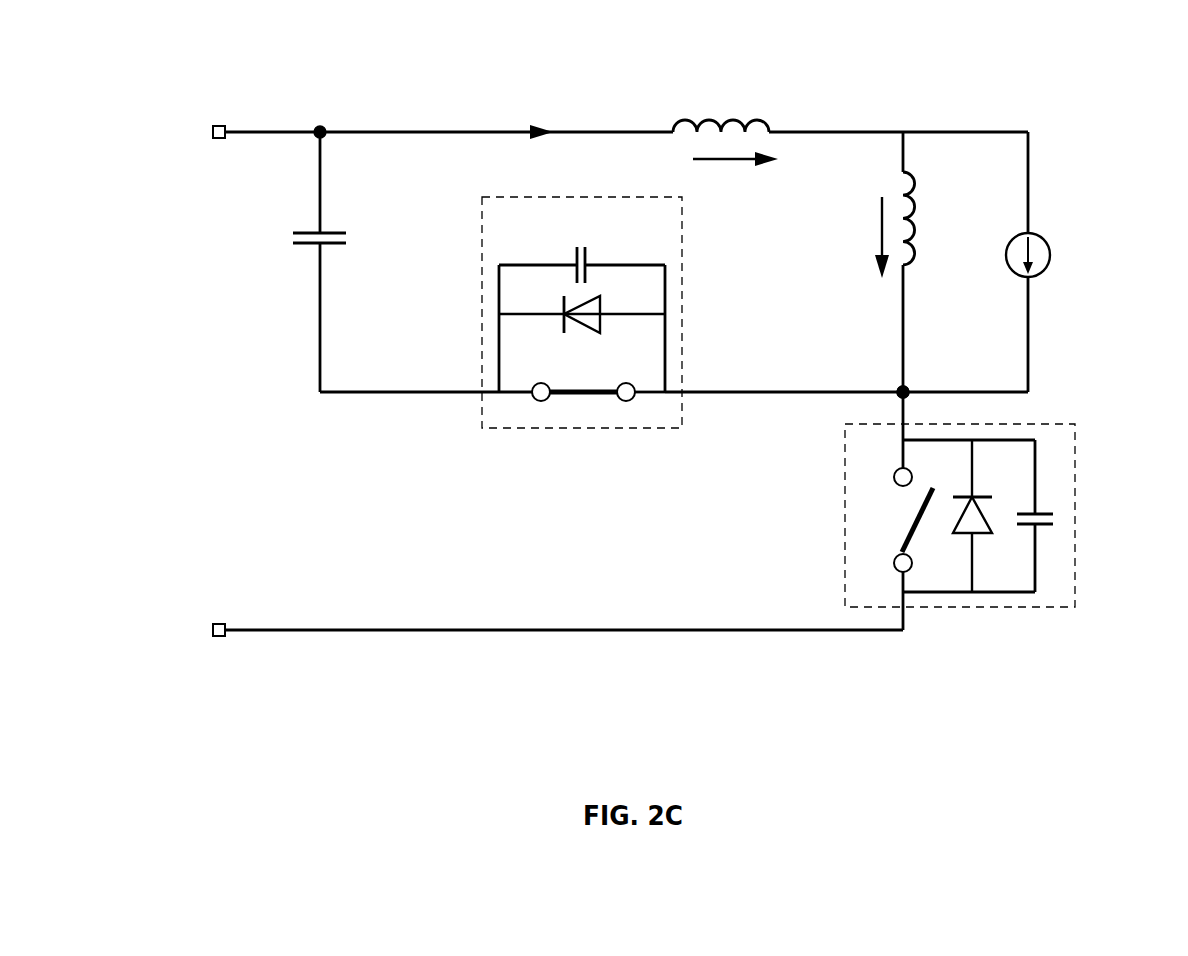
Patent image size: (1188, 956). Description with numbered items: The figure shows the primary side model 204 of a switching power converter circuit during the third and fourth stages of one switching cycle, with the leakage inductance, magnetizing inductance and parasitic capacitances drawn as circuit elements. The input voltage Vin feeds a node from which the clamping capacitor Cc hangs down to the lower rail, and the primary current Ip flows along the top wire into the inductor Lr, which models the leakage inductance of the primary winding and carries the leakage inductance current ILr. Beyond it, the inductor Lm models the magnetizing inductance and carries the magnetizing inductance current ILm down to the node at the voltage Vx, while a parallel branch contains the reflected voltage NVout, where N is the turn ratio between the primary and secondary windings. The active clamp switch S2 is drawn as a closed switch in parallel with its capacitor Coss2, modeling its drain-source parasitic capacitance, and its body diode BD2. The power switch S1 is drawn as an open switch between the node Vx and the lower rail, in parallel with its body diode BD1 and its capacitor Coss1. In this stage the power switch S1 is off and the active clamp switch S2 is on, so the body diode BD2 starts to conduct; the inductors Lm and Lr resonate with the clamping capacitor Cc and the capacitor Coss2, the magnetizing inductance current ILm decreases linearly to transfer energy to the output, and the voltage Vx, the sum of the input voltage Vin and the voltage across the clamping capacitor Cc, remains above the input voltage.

The primary side model 204 is at (258, 68).
The input voltage Vin is at (184, 132).
The clamping capacitor Cc is at (294, 238).
The primary current Ip is at (539, 110).
The inductor Lr is at (721, 106).
The leakage inductance current ILr is at (735, 179).
The inductor Lm is at (936, 262).
The magnetizing inductance current ILm is at (850, 237).
The voltage across the power switch Vx is at (882, 374).
The reflected voltage NVout is at (1070, 255).
The active clamp switch S2 is at (607, 433).
The capacitor Coss2 is at (580, 235).
The body diode BD2 is at (573, 298).
The power switch S1 is at (838, 510).
The body diode BD1 is at (992, 512).
The capacitor Coss1 is at (1062, 517).